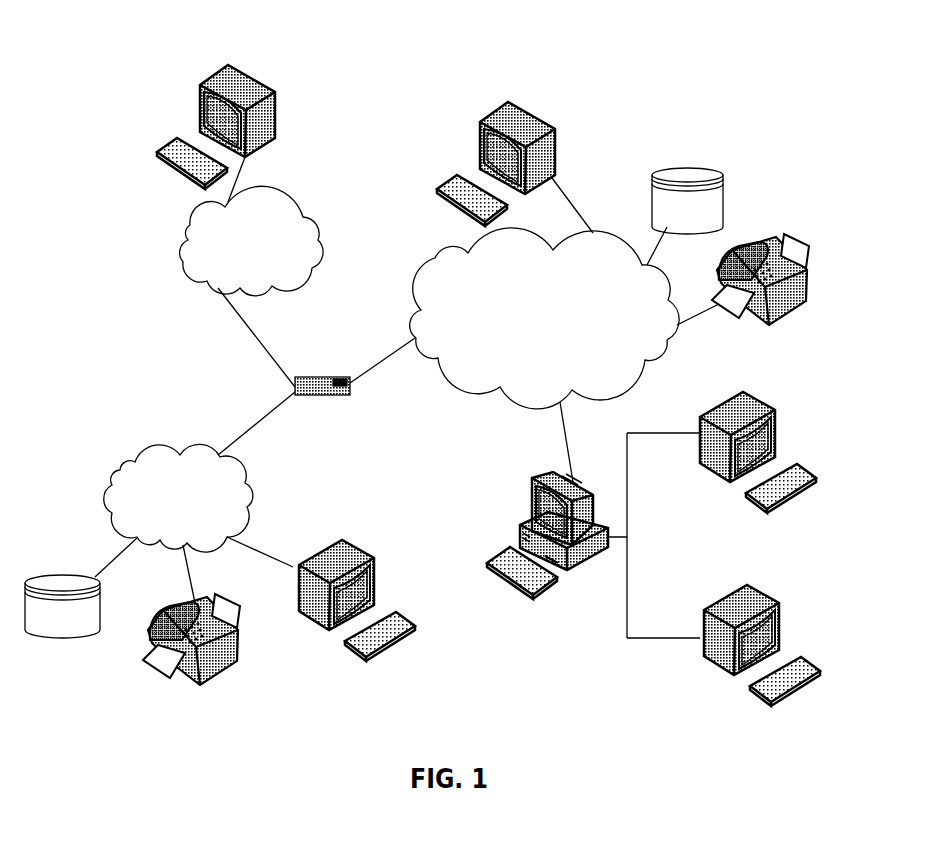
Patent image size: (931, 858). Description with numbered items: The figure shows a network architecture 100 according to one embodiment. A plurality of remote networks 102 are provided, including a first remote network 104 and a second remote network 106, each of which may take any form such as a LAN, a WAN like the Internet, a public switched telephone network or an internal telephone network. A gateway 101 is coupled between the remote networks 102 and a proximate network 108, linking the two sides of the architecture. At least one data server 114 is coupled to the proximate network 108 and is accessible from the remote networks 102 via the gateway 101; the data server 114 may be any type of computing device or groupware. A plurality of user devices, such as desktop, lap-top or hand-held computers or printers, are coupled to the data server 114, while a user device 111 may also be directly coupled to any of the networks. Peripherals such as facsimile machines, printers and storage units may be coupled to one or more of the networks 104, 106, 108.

The network architecture 100 is at (128, 47).
The gateway 101 is at (305, 377).
The remote networks 102 is at (152, 311).
The first remote network 104 is at (115, 473).
The second remote network 106 is at (312, 222).
The proximate network 108 is at (640, 380).
The user device 111 is at (556, 130).
The data server 114 is at (532, 494).